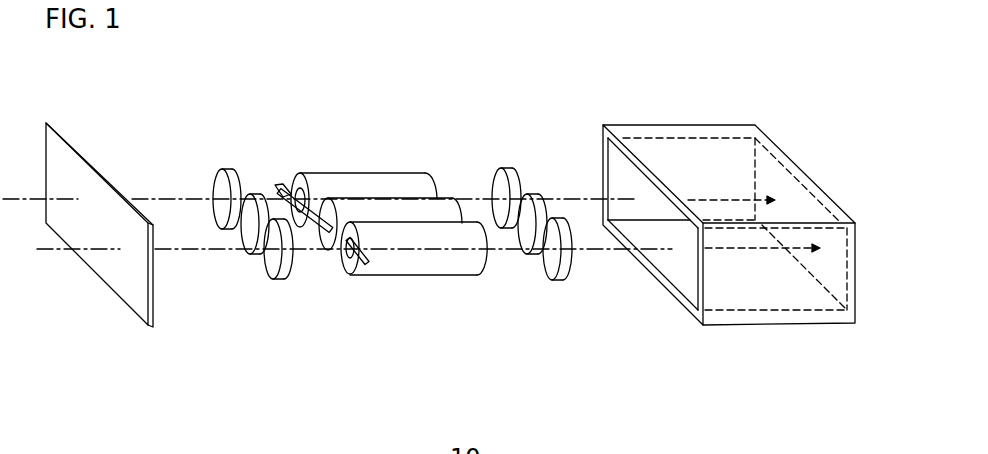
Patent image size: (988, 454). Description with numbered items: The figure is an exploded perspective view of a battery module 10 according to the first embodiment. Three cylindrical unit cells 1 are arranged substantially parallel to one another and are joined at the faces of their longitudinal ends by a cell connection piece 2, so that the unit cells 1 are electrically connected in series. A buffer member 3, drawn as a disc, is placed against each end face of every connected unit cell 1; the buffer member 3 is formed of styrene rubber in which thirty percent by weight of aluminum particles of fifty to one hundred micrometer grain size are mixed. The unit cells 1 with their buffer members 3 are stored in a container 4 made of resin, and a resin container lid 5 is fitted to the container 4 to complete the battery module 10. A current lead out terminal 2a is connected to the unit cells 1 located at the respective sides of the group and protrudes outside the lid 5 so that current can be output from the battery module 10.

The unit cells 1 is at (392, 183).
The cell connection piece 2 is at (312, 178).
The current lead out terminal 2a is at (282, 188).
The buffer member 3 is at (220, 180).
The container 4 is at (650, 132).
The container lid 5 is at (50, 123).
The battery module 10 is at (703, 75).